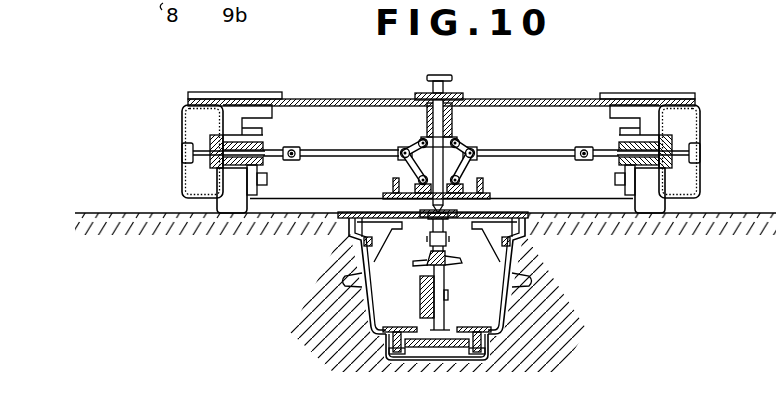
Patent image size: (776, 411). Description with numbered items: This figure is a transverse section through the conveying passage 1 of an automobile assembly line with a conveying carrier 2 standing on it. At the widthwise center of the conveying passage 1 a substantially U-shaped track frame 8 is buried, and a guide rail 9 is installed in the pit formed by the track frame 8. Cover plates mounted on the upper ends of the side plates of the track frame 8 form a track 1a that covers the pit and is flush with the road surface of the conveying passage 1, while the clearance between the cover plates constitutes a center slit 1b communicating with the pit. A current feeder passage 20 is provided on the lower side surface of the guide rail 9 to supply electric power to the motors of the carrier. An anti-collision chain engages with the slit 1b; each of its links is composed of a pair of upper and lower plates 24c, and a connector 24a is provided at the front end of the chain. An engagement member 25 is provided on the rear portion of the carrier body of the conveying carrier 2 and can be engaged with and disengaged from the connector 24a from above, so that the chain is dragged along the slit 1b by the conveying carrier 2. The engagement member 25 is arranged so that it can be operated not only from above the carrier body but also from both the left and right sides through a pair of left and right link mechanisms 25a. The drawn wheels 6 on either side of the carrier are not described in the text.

The conveying passage 1 is at (145, 204).
The track 1a is at (372, 204).
The center slit 1b is at (430, 220).
The conveying carrier 2 is at (310, 91).
The wheel 6 is at (229, 205).
The track frame 8 is at (510, 306).
The guide rail 9 is at (443, 259).
The current feeder passage 20 is at (440, 305).
The connector 24a is at (506, 247).
The plates 24c is at (362, 291).
The engagement member 25 is at (440, 124).
The link mechanisms 25a is at (380, 171).